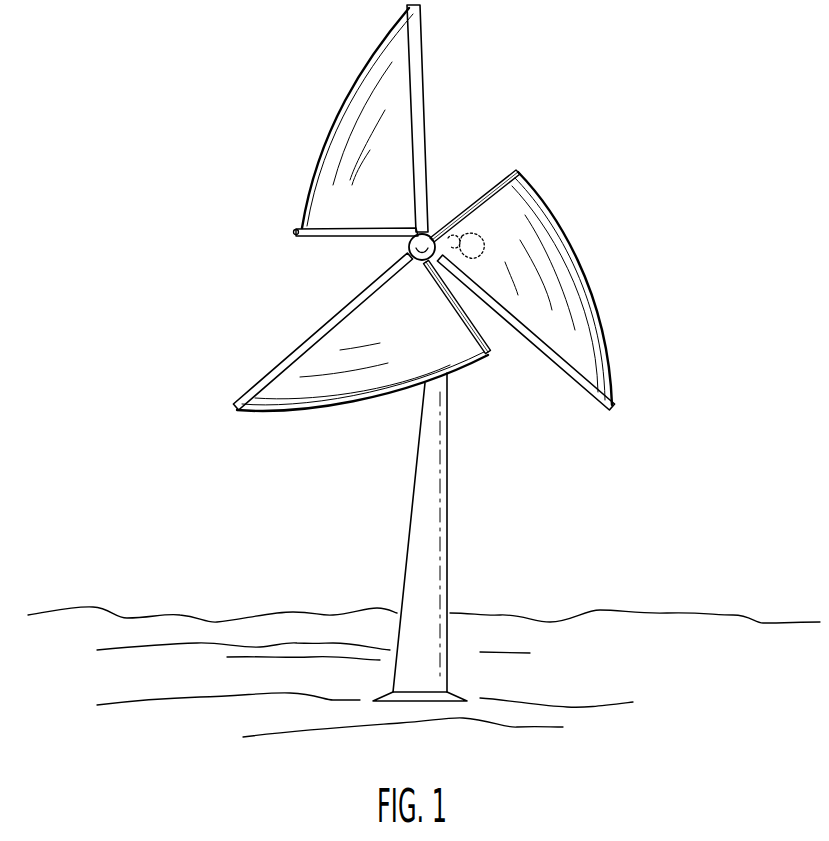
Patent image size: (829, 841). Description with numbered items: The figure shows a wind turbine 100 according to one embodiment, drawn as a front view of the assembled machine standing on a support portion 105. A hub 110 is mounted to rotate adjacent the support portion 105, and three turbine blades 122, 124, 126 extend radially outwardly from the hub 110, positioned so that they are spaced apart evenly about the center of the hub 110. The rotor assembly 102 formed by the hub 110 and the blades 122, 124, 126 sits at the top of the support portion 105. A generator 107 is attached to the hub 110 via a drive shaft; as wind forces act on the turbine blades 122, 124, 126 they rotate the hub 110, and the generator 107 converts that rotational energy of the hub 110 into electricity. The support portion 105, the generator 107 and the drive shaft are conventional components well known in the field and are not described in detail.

The wind turbine 100 is at (265, 116).
The rotor 102 is at (483, 158).
The support portion 105 is at (428, 482).
The generator 107 is at (478, 245).
The hub 110 is at (435, 227).
The turbine blade 122 is at (557, 363).
The turbine blade 124 is at (300, 341).
The turbine blade 126 is at (427, 98).